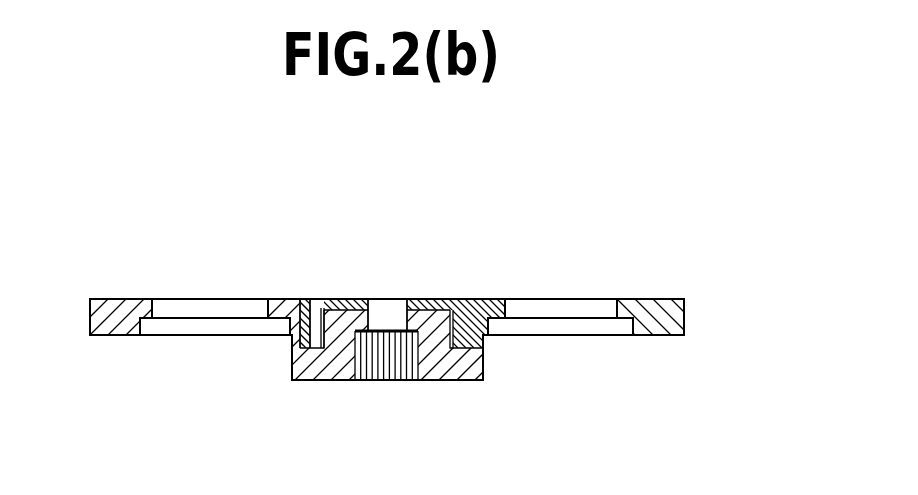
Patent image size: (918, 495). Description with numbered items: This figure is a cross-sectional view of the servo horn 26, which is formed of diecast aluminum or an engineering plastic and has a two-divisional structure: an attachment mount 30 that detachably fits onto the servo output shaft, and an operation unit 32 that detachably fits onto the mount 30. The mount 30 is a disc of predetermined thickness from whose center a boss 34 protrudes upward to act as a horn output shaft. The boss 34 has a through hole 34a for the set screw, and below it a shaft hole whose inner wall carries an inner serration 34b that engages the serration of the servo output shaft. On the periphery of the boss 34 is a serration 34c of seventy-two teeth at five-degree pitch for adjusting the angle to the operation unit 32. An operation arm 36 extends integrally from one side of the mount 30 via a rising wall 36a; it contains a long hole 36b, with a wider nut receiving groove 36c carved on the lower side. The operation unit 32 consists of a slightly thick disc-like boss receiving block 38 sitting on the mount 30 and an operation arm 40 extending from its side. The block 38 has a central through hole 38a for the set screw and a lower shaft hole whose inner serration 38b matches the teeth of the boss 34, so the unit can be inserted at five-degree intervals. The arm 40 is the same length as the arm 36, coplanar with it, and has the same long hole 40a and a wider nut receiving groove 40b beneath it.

The servo horn 26 is at (623, 173).
The attachment mount 30 is at (322, 392).
The operation unit 32 is at (486, 290).
The boss 34 is at (436, 332).
The through hole 34a is at (383, 311).
The inner serration 34b is at (392, 372).
The serration 34c is at (296, 312).
The operation arm 36 is at (113, 298).
The rising wall 36a is at (293, 332).
The long hole 36b is at (188, 306).
The nut receiving groove 36c is at (180, 328).
The boss receiving block 38 is at (437, 306).
The through hole 38a is at (383, 311).
The inner serration 38b is at (296, 312).
The operation arm 40 is at (652, 298).
The long hole 40a is at (570, 306).
The nut receiving groove 40b is at (574, 335).